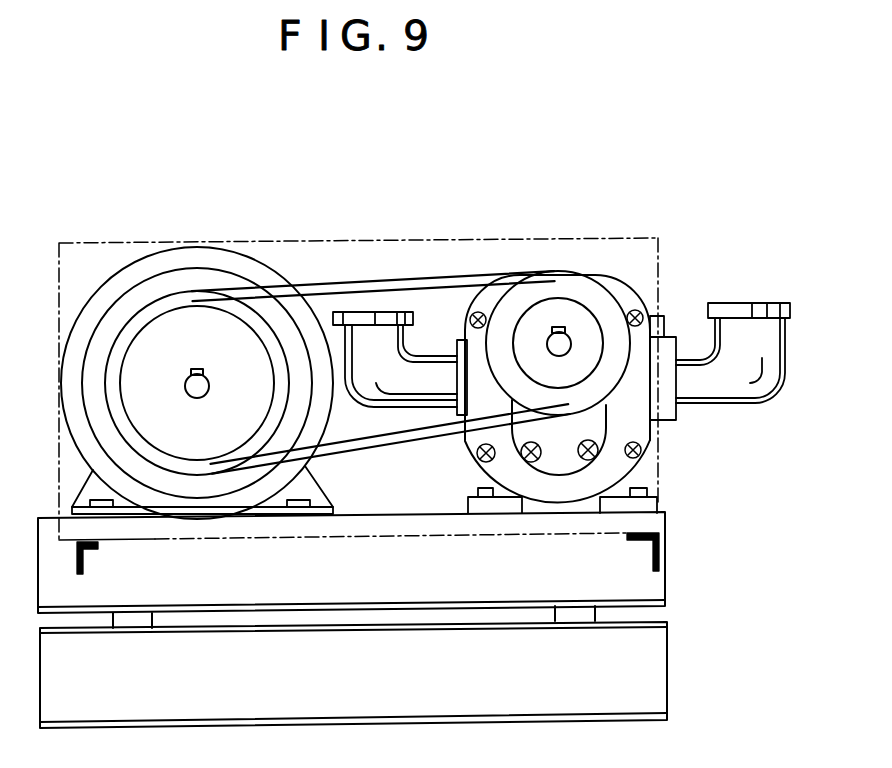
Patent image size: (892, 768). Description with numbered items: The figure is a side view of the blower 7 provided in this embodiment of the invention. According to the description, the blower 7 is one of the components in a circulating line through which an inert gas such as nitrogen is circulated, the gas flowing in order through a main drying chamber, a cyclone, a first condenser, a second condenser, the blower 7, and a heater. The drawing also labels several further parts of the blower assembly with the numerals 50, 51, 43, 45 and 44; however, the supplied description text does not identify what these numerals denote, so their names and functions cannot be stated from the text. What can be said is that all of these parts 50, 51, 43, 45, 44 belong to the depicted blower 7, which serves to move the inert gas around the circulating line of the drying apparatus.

The drive pulley 50 is at (222, 268).
The belt 51 is at (320, 287).
The suction pipe 43 is at (373, 310).
The pump housing 45 is at (623, 298).
The discharge pipe 44 is at (760, 303).
The blower 7 is at (663, 437).